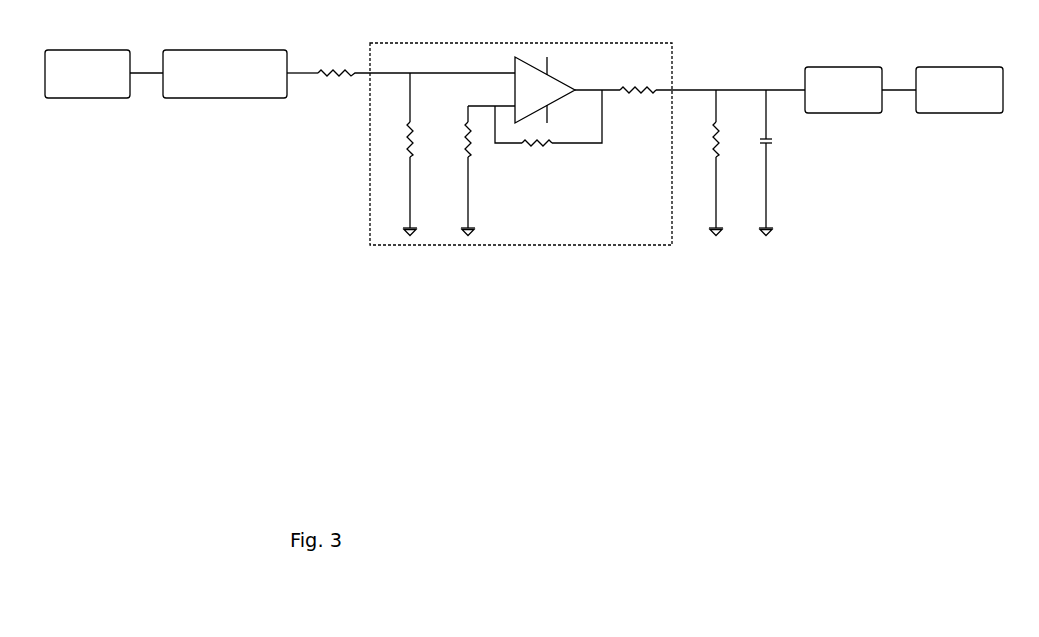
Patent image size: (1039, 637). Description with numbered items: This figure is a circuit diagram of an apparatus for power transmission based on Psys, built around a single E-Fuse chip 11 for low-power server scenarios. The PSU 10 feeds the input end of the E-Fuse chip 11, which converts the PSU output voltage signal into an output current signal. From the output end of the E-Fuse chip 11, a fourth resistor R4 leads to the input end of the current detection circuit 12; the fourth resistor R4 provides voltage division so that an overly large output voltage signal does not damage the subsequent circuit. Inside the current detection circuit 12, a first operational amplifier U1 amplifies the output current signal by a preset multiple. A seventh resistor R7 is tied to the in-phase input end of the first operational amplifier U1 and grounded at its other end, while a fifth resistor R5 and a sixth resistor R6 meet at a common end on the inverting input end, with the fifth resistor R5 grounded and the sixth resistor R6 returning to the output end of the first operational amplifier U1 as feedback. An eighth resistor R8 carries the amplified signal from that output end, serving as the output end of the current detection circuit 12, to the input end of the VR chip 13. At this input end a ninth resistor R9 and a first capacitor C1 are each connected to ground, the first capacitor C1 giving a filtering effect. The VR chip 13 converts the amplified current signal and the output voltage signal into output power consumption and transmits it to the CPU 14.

The PSU 10 is at (88, 50).
The E-Fuse chip 11 is at (232, 50).
The current detection circuit 12 is at (527, 40).
The VR chip 13 is at (845, 67).
The CPU 14 is at (963, 67).
The fourth resistor R4 is at (337, 57).
The fifth resistor R5 is at (473, 171).
The sixth resistor R6 is at (548, 136).
The seventh resistor R7 is at (400, 154).
The eighth resistor R8 is at (638, 74).
The ninth resistor R9 is at (701, 163).
The first operational amplifier U1 is at (567, 89).
The first capacitor C1 is at (782, 163).